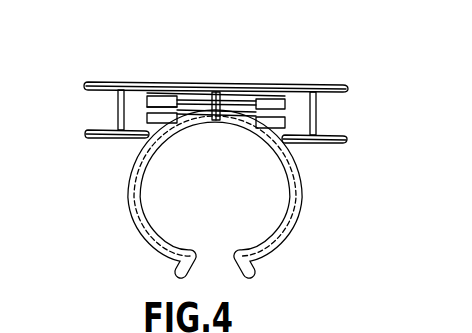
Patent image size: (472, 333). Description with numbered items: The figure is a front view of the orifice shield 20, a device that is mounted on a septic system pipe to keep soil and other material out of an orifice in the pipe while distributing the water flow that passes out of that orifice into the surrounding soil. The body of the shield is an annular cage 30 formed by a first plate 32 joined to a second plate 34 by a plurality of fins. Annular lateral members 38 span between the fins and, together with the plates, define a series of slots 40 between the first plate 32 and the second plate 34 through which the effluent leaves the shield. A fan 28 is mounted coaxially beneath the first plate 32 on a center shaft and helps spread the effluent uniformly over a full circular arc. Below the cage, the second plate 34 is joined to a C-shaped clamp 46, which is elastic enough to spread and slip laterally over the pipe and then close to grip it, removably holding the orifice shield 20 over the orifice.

The orifice shield 20 is at (214, 113).
The fan 28 is at (270, 108).
The annular cage 30 is at (165, 105).
The first plate 32 is at (88, 81).
The second plate 34 is at (88, 137).
The annular lateral member 38 is at (250, 98).
The slot 40 is at (147, 97).
The C-shaped clamp 46 is at (153, 232).